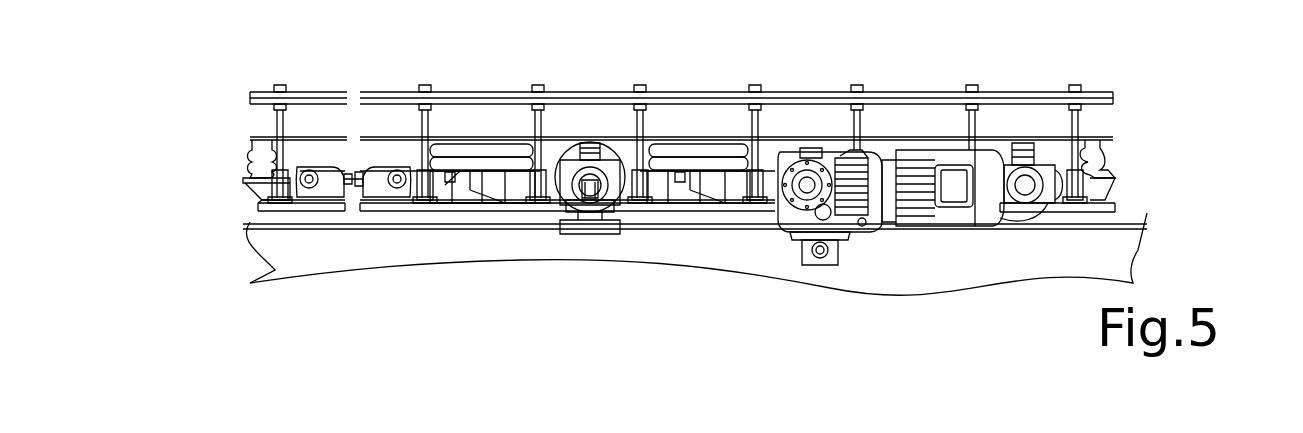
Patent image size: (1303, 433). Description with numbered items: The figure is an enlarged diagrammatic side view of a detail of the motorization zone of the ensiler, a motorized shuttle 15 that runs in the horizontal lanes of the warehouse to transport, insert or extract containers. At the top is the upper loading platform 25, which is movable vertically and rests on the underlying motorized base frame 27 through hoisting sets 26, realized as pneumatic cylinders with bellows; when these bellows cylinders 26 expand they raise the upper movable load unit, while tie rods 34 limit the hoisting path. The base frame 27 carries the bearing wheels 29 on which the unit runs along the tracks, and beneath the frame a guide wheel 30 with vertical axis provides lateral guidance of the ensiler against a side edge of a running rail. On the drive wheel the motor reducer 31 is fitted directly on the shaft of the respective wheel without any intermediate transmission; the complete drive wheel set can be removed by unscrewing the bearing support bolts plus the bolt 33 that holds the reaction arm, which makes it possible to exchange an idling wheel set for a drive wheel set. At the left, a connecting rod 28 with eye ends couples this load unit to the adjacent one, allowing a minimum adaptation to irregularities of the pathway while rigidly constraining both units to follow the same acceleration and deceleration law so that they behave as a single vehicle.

The motorized shuttle 15 is at (250, 262).
The upper loading platform 25 is at (250, 92).
The hoisting set (bellows cylinder) 26 is at (473, 152).
The base frame (motorized structure) 27 is at (470, 210).
The connecting rod 28 is at (353, 176).
The bearing wheel 29 is at (618, 208).
The guide wheel with vertical axis 30 is at (570, 232).
The motor reducer 31 is at (951, 226).
The bolt holding the reaction arm 33 is at (813, 262).
The tie rod 34 is at (636, 130).